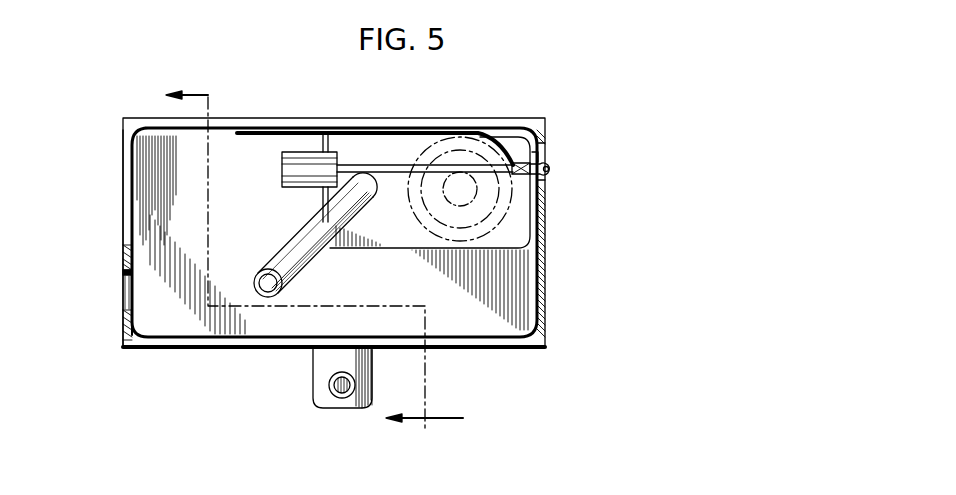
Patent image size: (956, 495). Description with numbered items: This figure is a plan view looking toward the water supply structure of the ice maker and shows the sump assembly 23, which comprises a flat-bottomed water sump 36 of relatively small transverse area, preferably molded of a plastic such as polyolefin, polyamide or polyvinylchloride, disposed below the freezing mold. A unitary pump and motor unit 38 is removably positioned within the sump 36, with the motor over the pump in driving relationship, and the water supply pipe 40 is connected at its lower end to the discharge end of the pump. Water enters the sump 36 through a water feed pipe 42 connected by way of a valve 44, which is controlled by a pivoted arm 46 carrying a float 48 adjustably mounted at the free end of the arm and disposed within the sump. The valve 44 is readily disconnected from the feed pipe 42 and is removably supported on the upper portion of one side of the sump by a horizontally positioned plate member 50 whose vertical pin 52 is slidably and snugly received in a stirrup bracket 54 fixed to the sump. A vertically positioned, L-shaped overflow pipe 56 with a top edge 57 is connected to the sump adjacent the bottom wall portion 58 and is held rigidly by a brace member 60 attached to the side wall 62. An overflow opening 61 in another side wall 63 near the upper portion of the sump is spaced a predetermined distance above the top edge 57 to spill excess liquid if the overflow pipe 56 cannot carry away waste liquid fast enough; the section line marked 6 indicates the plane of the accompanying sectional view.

The sump assembly 23 is at (535, 237).
The water sump 36 is at (548, 325).
The pump and motor unit 38 is at (505, 210).
The water supply pipe 40 is at (318, 255).
The water feed pipe 42 is at (264, 137).
The valve 44 is at (538, 159).
The pivoted arm 46 is at (398, 168).
The float 48 is at (292, 160).
The plate member 50 is at (533, 176).
The vertical pin 52 is at (551, 164).
The stirrup bracket 54 is at (551, 171).
The overflow pipe 56 is at (336, 408).
The top edge 57 is at (329, 385).
The bottom wall portion 58 is at (252, 243).
The brace member 60 is at (367, 378).
The overflow opening 61 is at (122, 290).
The side wall 62 is at (470, 348).
The side wall 63 is at (122, 213).
The section line 6- 6 is at (323, 258).